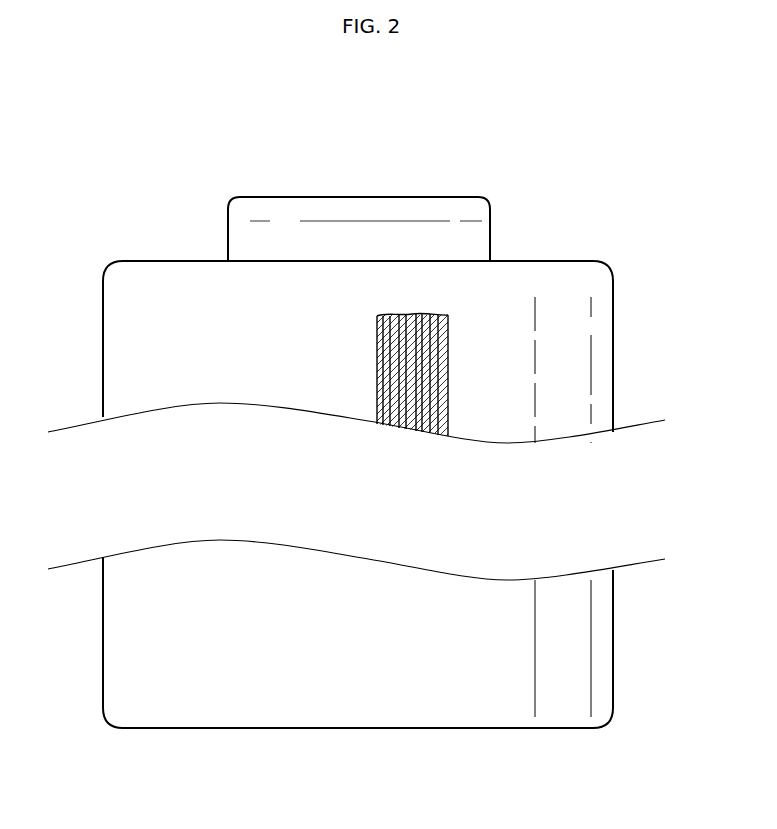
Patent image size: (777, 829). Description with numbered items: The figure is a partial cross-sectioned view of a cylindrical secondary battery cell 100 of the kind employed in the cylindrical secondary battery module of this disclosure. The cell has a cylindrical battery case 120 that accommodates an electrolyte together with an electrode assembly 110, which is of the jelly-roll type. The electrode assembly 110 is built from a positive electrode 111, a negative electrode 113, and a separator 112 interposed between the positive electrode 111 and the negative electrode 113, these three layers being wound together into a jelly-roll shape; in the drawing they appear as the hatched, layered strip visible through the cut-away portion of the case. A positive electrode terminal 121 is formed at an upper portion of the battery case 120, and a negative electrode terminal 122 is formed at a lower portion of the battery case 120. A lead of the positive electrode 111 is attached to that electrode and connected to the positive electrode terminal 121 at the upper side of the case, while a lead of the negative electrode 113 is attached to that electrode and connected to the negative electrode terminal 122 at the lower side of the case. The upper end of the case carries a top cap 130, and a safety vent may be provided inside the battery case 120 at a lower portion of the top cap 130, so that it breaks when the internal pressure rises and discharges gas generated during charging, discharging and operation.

The cylindrical secondary battery cell 100 is at (213, 138).
The electrode assembly 110 is at (448, 500).
The positive electrode 111 is at (386, 430).
The separator 112 is at (396, 431).
The negative electrode 113 is at (407, 432).
The cylindrical battery case 120 is at (613, 338).
The positive electrode terminal 121 is at (284, 240).
The negative electrode terminal 122 is at (431, 728).
The top cap 130 is at (431, 197).